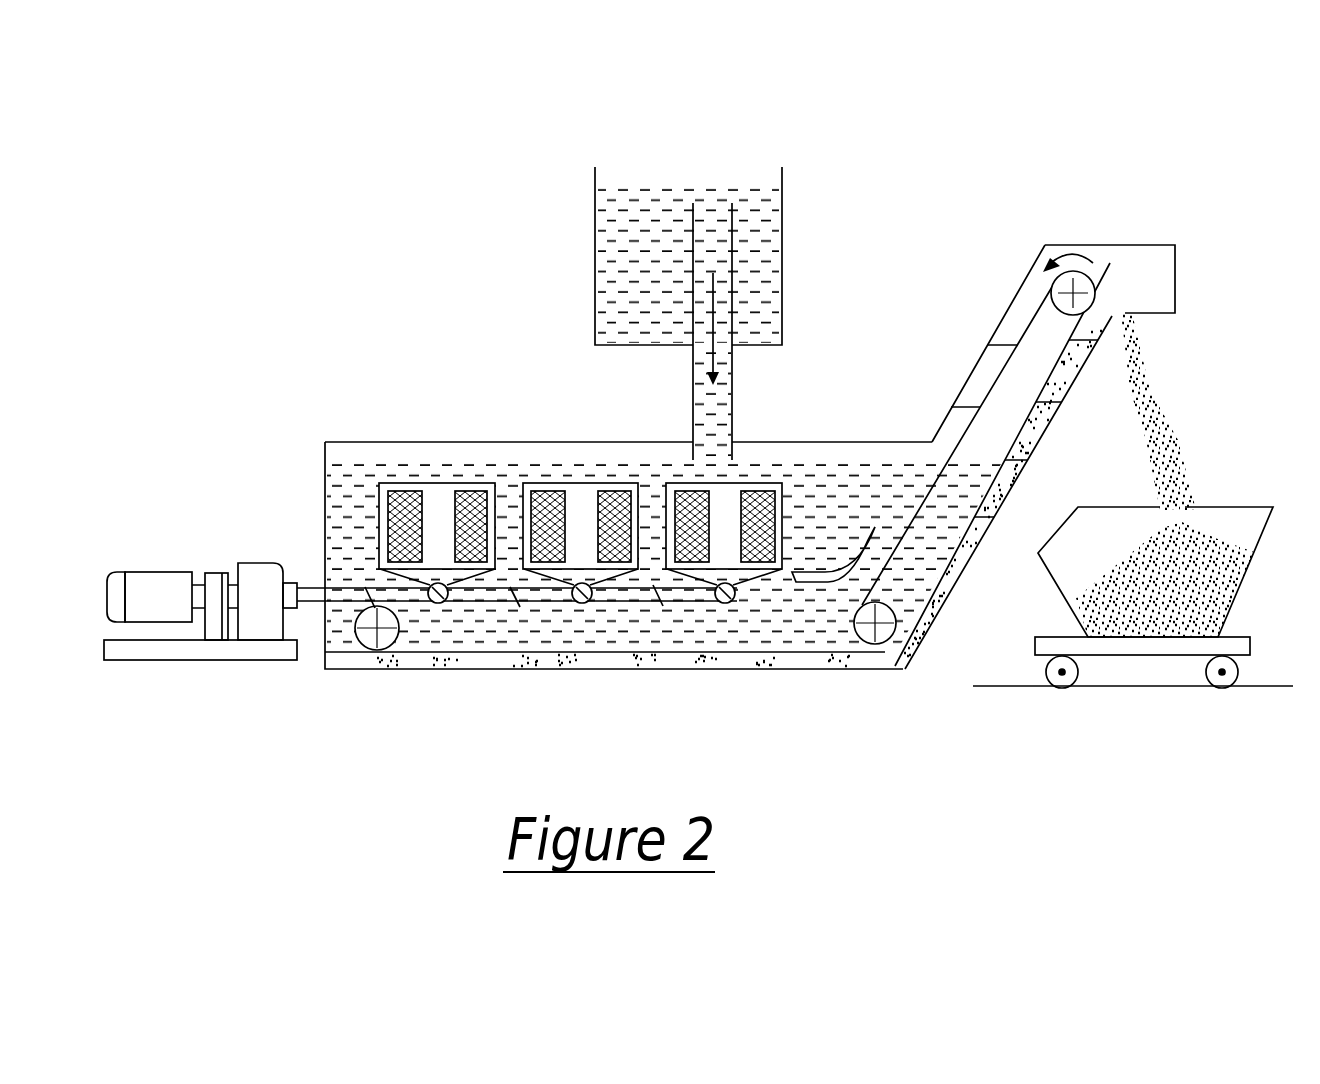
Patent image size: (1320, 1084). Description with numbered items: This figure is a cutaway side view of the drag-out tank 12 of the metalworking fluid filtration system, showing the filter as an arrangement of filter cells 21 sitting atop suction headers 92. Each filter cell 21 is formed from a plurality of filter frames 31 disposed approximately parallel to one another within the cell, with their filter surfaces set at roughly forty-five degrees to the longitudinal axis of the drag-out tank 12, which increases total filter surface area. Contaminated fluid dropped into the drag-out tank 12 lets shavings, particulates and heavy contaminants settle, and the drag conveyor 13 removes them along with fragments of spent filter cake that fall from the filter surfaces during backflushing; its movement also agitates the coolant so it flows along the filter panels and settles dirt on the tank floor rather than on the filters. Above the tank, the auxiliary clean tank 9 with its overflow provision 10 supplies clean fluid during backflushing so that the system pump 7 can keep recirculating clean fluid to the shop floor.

The system pump 7 is at (255, 592).
The auxiliary clean tank 9 is at (595, 211).
The overflow provision 10 is at (709, 215).
The drag-out tank 12 is at (325, 484).
The drag conveyor 13 is at (1030, 327).
The filter cell 21 is at (673, 480).
The filter frame 31 is at (424, 572).
The suction header 92 is at (428, 575).